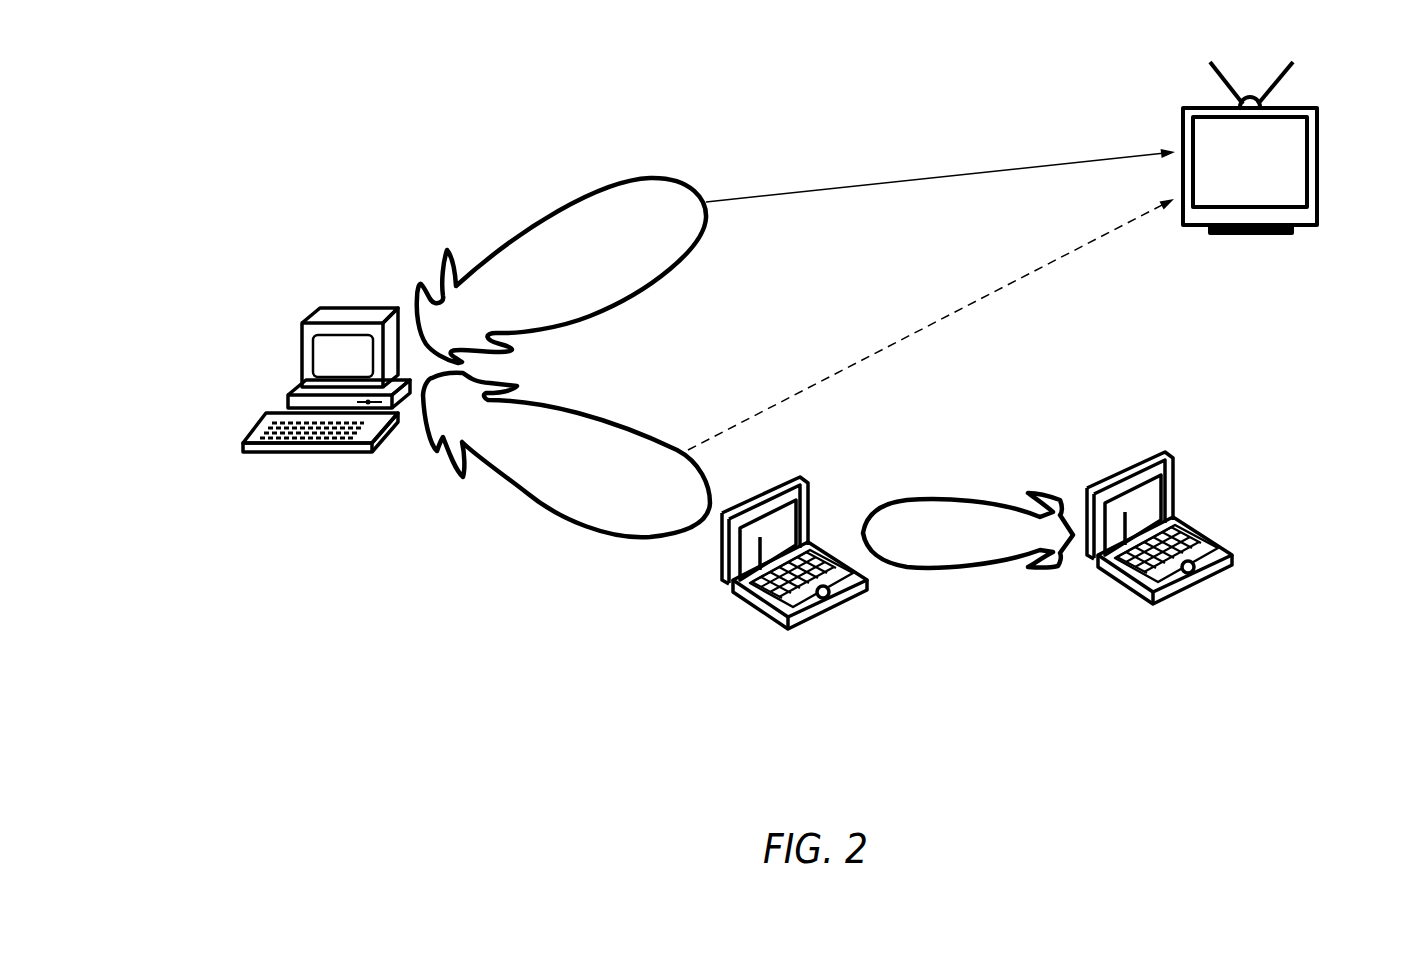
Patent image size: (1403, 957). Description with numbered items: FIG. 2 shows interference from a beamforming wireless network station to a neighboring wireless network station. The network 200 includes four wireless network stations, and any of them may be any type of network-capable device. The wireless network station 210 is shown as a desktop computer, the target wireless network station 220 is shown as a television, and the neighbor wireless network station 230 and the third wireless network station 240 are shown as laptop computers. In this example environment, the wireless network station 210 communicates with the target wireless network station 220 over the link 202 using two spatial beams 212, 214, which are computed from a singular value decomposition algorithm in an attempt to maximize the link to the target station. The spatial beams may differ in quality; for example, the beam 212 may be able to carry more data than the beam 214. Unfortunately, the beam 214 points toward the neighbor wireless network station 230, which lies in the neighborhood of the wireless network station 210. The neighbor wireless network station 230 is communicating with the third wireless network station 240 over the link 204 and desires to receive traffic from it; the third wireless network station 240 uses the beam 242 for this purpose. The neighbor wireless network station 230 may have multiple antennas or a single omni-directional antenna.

The network 200 is at (297, 738).
The link 202 is at (899, 266).
The link 204 is at (1060, 468).
The wireless network station 210 is at (367, 306).
The beam 212 is at (613, 180).
The beam 214 is at (556, 504).
The target wireless network station 220 is at (1318, 158).
The neighbor wireless network station 230 is at (783, 486).
The third wireless network station 240 is at (1150, 454).
The beam 242 is at (973, 569).